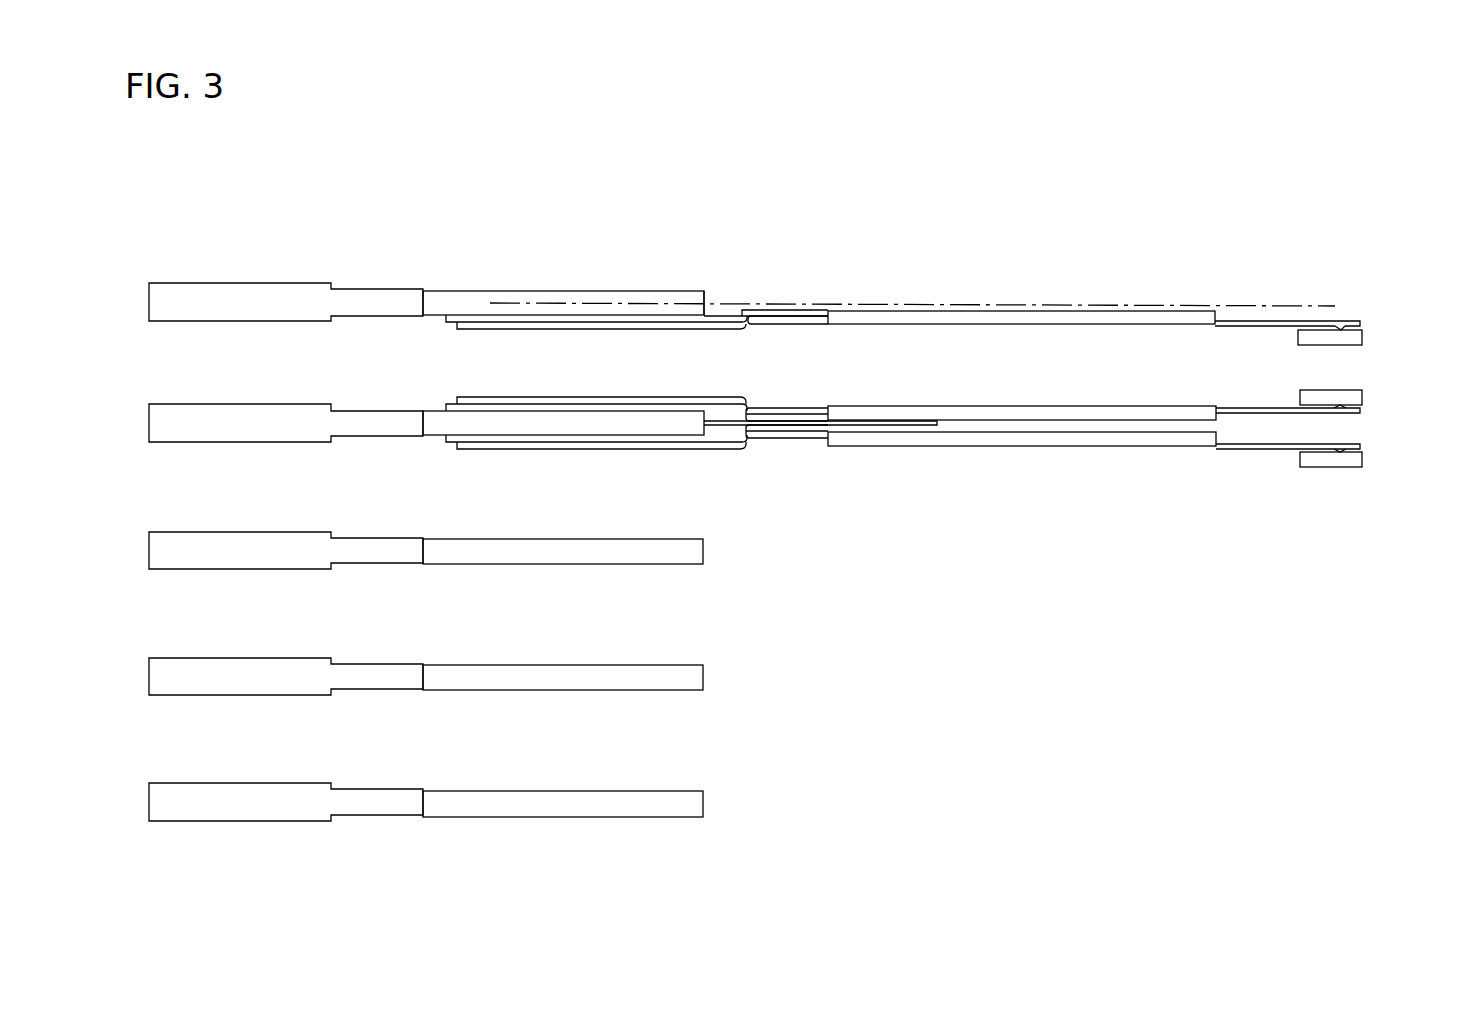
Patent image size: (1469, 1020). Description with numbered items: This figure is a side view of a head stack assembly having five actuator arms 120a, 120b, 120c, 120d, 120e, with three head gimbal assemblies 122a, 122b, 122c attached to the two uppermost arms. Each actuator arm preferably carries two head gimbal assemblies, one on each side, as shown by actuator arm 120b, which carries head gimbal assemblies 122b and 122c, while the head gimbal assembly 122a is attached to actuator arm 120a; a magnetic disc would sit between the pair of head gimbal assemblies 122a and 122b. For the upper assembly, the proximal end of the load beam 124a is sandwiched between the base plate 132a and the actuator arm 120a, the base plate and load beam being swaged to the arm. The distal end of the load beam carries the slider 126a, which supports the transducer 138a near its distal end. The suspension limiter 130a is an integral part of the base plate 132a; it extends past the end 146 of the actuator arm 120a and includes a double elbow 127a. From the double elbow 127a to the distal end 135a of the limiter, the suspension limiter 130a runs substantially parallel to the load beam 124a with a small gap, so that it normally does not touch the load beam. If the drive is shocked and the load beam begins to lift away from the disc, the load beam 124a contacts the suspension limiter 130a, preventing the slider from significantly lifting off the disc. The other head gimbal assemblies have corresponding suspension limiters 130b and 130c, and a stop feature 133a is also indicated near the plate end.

The actuator arm 120a is at (527, 293).
The actuator arm 120b is at (503, 424).
The actuator arm 120c is at (536, 552).
The actuator arm 120d is at (540, 676).
The actuator arm 120e is at (538, 802).
The head gimbal assembly 122a is at (1035, 313).
The head gimbal assembly 122b is at (992, 408).
The head gimbal assembly 122c is at (995, 448).
The load beam 124a is at (642, 321).
The slider 126a is at (1307, 341).
The double elbow 127a is at (744, 308).
The suspension limiter 130a is at (808, 310).
The suspension limiter 130b is at (792, 419).
The suspension limiter 130c is at (786, 432).
The base plate 132a is at (504, 330).
The stop 133a is at (714, 331).
The distal end of suspension limiter 135a is at (935, 305).
The transducer 138a is at (1354, 337).
The end of actuator arm 146 is at (697, 291).